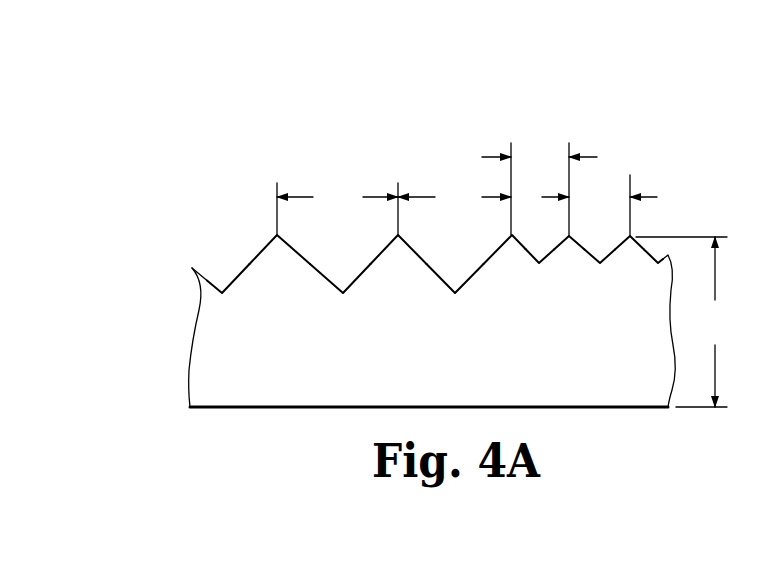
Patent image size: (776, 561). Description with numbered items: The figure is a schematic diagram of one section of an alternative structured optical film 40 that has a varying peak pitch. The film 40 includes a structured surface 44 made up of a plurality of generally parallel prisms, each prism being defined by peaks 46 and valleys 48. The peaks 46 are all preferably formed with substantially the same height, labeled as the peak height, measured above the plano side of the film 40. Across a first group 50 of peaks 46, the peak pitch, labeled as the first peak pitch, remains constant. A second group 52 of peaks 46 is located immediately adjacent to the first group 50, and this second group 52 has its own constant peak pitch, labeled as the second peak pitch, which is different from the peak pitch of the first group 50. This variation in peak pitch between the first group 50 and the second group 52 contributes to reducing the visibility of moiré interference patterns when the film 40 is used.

The structured optical film 40 is at (678, 180).
The structured surface 44 is at (184, 236).
The peaks 46 is at (277, 240).
The valleys 48 is at (343, 297).
The first group 50 is at (512, 131).
The second group 52 is at (627, 131).